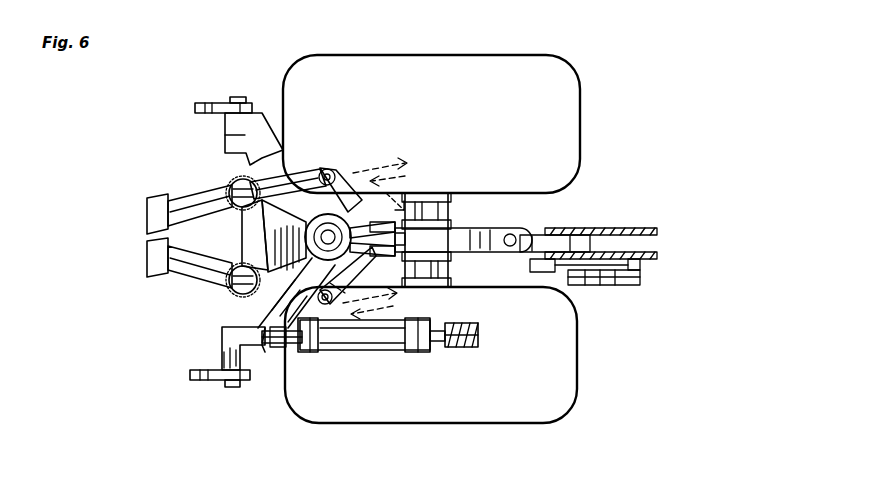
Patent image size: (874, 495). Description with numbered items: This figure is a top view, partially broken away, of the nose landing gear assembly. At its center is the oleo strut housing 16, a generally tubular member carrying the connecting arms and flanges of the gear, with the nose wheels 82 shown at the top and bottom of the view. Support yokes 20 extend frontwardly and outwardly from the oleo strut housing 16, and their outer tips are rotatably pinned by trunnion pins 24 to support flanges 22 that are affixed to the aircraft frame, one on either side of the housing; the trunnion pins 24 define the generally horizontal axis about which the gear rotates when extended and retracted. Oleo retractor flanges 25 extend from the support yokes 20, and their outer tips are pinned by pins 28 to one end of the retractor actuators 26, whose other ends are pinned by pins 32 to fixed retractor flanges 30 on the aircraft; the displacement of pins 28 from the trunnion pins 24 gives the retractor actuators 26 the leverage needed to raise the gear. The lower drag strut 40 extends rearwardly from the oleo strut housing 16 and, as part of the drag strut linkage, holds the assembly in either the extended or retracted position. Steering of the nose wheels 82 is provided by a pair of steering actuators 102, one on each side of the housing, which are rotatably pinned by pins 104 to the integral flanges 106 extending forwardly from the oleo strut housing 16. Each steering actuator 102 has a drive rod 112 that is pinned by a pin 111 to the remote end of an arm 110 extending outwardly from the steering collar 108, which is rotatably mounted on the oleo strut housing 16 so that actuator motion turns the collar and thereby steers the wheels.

The oleo strut housing 16 is at (292, 238).
The support yokes 20 is at (226, 149).
The support flanges 22 is at (222, 103).
The trunnion pins 24 is at (238, 97).
The oleo retractor flanges 25 is at (270, 348).
The retractor actuators 26 is at (337, 350).
The pins 28 is at (282, 346).
The fixed retractor flanges 30 is at (474, 346).
The pins 32 is at (445, 352).
The lower drag strut 40 is at (472, 232).
The nose wheels 82 is at (582, 112).
The steering actuators 102 is at (176, 199).
The pins 104 is at (232, 176).
The flanges 106 is at (240, 240).
The steering collar 108 is at (364, 172).
The arms 110 is at (346, 171).
The pins 111 is at (333, 168).
The drive rods 112 is at (306, 173).